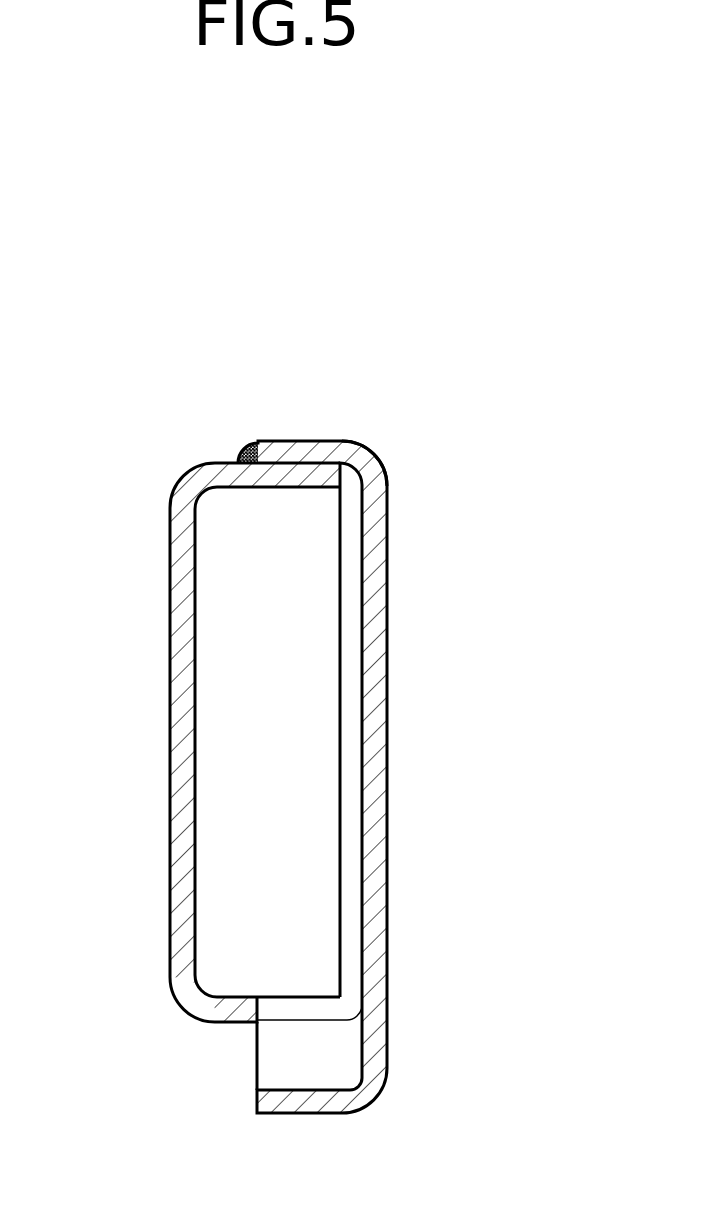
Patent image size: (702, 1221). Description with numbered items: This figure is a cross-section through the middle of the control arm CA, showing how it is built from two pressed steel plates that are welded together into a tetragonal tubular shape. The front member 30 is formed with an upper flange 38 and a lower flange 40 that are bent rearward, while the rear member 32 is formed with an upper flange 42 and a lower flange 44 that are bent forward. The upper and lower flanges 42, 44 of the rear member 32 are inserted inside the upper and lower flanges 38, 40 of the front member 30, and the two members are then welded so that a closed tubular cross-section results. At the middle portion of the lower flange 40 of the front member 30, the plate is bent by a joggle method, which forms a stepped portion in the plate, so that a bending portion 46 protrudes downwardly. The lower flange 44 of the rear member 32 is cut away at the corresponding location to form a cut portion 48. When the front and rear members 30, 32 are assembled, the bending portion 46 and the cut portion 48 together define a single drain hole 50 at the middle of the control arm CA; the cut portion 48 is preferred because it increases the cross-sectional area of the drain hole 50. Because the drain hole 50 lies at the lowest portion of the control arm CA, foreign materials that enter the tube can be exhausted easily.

The control arm CA is at (385, 387).
The front member 30 is at (387, 687).
The rear member 32 is at (170, 717).
The upper flange 38 is at (292, 441).
The lower flange 40 is at (318, 1102).
The upper flange 42 is at (283, 499).
The lower flange 44 is at (217, 1022).
The bending portion 46 is at (300, 1090).
The cut portion 48 is at (293, 1007).
The drain hole 50 is at (214, 1071).